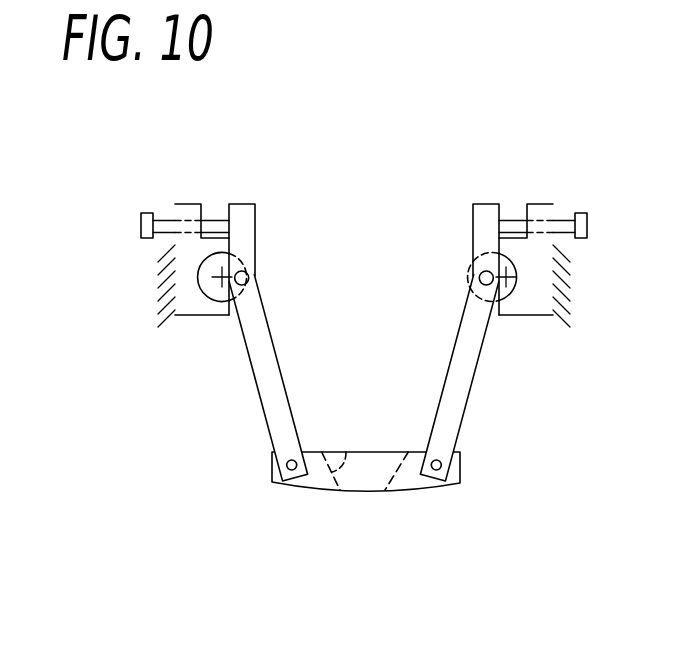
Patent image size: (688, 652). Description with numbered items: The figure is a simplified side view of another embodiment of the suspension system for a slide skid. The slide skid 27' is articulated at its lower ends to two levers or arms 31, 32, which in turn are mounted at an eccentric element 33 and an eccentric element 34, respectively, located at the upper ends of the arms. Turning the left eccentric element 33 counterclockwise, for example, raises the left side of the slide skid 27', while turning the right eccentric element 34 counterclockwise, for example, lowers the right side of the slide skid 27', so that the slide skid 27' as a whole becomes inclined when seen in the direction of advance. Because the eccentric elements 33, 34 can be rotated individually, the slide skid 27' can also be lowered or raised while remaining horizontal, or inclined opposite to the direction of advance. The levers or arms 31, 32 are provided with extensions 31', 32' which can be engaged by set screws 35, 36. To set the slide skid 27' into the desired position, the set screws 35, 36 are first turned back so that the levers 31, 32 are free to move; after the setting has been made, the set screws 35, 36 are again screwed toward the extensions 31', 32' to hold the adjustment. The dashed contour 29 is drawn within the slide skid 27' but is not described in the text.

The slide skid 27' is at (366, 506).
The guide slot 29 is at (346, 452).
The lever or arm 31 is at (250, 378).
The extension 31' is at (264, 227).
The lever or arm 32 is at (482, 378).
The extension 32' is at (462, 229).
The eccentric element 33 is at (220, 290).
The eccentric element 34 is at (518, 288).
The set screw 35 is at (212, 227).
The set screw 36 is at (510, 226).